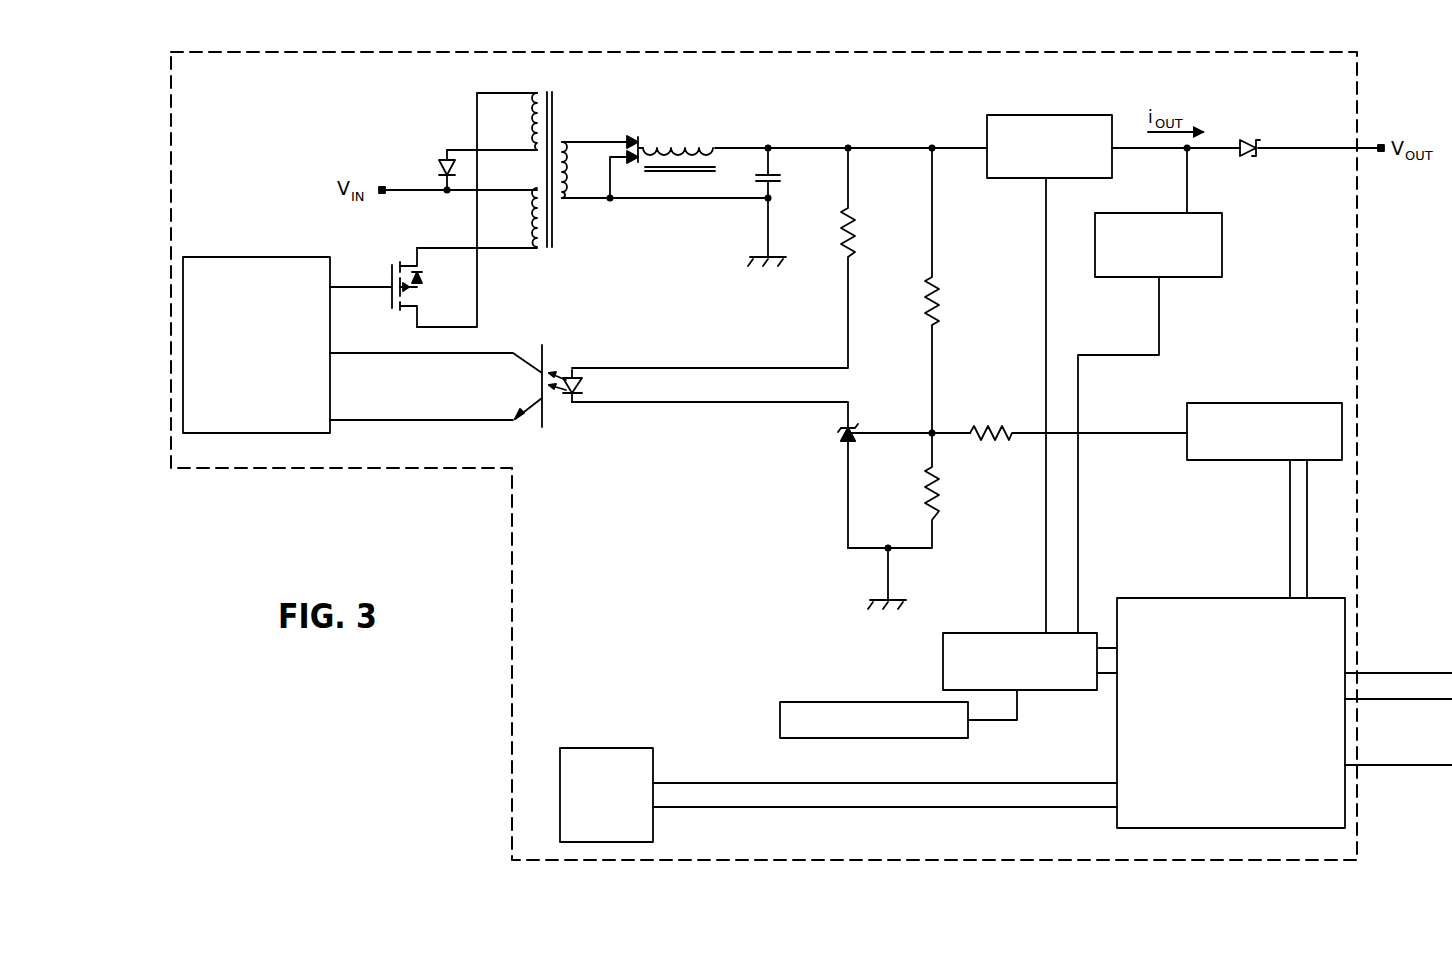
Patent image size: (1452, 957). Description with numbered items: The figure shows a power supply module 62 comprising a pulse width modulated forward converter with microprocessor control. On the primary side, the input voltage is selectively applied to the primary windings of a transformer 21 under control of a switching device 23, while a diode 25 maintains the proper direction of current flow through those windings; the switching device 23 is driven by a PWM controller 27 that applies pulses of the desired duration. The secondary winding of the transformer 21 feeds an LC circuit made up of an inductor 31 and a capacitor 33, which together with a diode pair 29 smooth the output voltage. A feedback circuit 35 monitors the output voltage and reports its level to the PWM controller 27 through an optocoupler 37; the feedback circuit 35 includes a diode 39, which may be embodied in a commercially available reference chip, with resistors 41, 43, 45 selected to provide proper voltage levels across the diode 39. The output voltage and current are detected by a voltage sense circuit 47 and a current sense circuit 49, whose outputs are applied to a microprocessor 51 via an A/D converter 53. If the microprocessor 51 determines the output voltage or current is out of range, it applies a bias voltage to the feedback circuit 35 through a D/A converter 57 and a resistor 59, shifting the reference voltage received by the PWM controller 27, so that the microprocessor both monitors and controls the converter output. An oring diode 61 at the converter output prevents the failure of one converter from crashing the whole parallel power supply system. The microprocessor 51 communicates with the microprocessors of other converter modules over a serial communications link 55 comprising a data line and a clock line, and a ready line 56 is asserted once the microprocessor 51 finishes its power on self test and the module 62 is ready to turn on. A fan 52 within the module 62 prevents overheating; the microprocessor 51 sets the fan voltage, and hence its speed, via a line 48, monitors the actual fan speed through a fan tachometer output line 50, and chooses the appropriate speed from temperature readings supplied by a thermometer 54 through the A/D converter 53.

The transformer 21 is at (566, 94).
The switching device 23 is at (385, 272).
The diode 25 is at (440, 170).
The PWM controller 27 is at (256, 257).
The diode pair 29 is at (641, 132).
The inductor 31 is at (697, 147).
The capacitor 33 is at (786, 181).
The feedback circuit 35 is at (748, 456).
The optocoupler 37 is at (554, 359).
The diode 39 is at (844, 431).
The resistor 41 is at (951, 301).
The resistor 43 is at (951, 496).
The resistor 45 is at (862, 230).
The voltage sense circuit 47 is at (1161, 213).
The line 48 is at (742, 808).
The current sense circuit 49 is at (1042, 115).
The fan tachometer output line 50 is at (706, 783).
The microprocessor 51 is at (1193, 598).
The fan 52 is at (603, 748).
The A/D converter 53 is at (943, 662).
The thermometer 54 is at (826, 702).
The serial communications link 55 is at (1412, 636).
The ready line 56 is at (1408, 767).
The D/A converter 57 is at (1261, 403).
The resistor 59 is at (994, 421).
The oring diode 61 is at (1247, 138).
The power supply module 62 is at (510, 537).